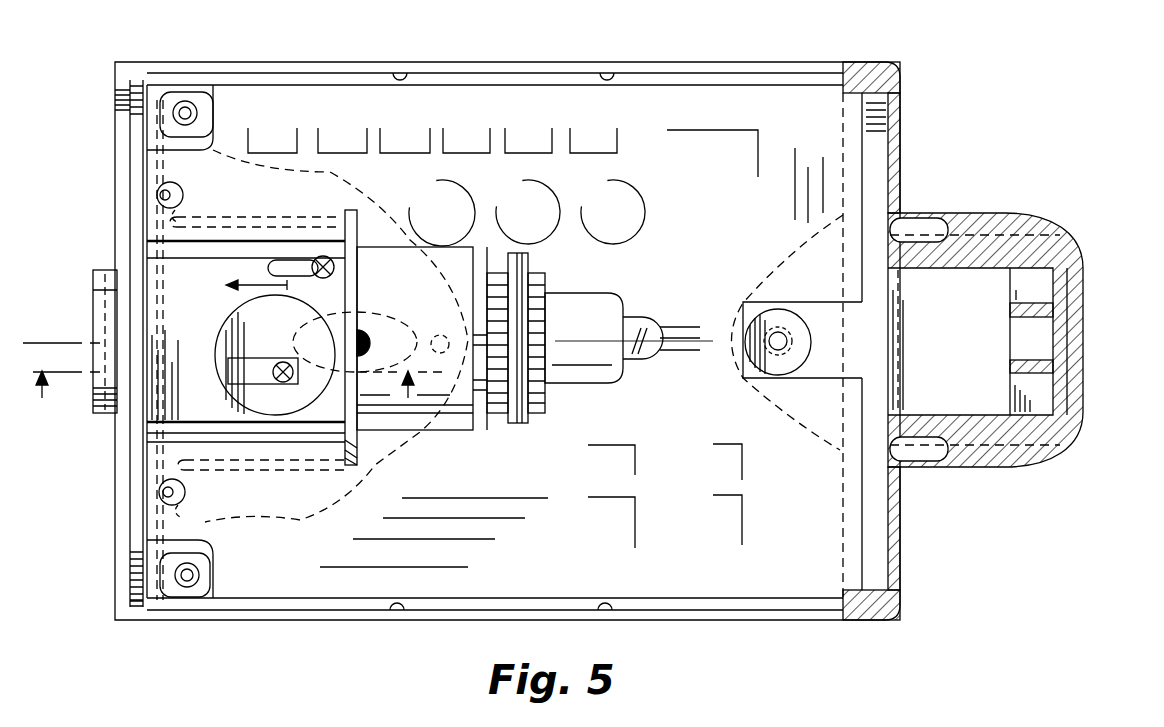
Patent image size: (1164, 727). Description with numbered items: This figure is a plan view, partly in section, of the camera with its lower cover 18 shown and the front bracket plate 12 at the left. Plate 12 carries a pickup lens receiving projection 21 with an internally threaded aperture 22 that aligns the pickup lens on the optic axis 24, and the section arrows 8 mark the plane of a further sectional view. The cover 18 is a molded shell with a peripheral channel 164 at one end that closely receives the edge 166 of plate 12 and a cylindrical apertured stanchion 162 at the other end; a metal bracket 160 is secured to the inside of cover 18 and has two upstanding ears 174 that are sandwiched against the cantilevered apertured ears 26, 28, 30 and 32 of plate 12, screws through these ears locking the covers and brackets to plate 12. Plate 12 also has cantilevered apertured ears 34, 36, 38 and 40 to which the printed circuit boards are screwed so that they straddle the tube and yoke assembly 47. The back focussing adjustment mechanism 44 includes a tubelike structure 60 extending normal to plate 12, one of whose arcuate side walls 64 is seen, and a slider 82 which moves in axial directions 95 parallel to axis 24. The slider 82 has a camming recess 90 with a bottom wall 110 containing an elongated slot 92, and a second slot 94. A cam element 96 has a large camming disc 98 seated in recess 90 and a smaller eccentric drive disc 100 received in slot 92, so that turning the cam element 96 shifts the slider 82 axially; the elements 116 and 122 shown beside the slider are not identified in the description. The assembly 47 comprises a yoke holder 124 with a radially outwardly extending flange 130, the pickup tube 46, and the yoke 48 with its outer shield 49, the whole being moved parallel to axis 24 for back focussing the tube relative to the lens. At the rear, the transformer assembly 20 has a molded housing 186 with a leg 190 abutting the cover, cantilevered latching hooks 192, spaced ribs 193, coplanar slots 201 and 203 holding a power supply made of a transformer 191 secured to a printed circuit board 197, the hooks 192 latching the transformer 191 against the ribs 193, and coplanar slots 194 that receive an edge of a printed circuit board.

The lower cover 18 is at (535, 66).
The coplanar slots 194 is at (870, 90).
The back focussing adjustment mechanism 44 is at (413, 231).
The front bracket plate 12 is at (130, 552).
The peripheral channel 164 is at (130, 86).
The edge of front plate 166 is at (137, 612).
The internally threaded aperture 22 is at (100, 305).
The pickup lens receiving projection 21 is at (93, 272).
The slider 82 is at (150, 262).
The optic axis 24 is at (60, 343).
The section line 8- 8 is at (237, 401).
The upstanding ears 174 is at (215, 118).
The cantilevered apertured ear 30 is at (188, 100).
The cantilevered apertured ear 32 is at (178, 92).
The cantilevered apertured ear 38 is at (180, 187).
The cantilevered apertured ear 40 is at (183, 203).
The radially outwardly extending flange 130 is at (362, 215).
The yoke holder 124 is at (378, 456).
The outer shield 49 is at (482, 426).
The yoke 48 is at (518, 426).
The pickup tube 46 is at (578, 386).
The tube and yoke assembly 47 is at (585, 291).
The bottom wall 110 is at (232, 326).
The cam element 96 is at (253, 360).
The drive member disc 100 is at (283, 362).
The camming disc 98 is at (228, 372).
The elongated slot 92 is at (232, 396).
The camming recess 90 is at (302, 382).
The dashed contour 122 is at (371, 342).
The second slot 94 is at (285, 278).
The screw 116 is at (335, 272).
The axial directions 95 is at (258, 285).
The metal bracket 160 is at (300, 520).
The first arcuate side wall 64 is at (147, 433).
The tubelike structure 60 is at (312, 463).
The cantilevered apertured ear 34 is at (186, 492).
The cantilevered apertured ear 36 is at (180, 508).
The cantilevered apertured ear 26 is at (213, 578).
The cantilevered apertured ear 28 is at (190, 600).
The cylindrical apertured stanchion 162 is at (796, 312).
The leg 190 is at (802, 252).
The transformer assembly 20 is at (1097, 265).
The cantilevered spaced latching hooks 192 is at (962, 292).
The coplanar slot 203 is at (945, 322).
The coplanar slot 201 is at (940, 378).
The transformer 191 is at (893, 344).
The spaced ribs 193 is at (1040, 335).
The printed circuit board 197 is at (1045, 291).
The transformer housing 186 is at (1078, 392).